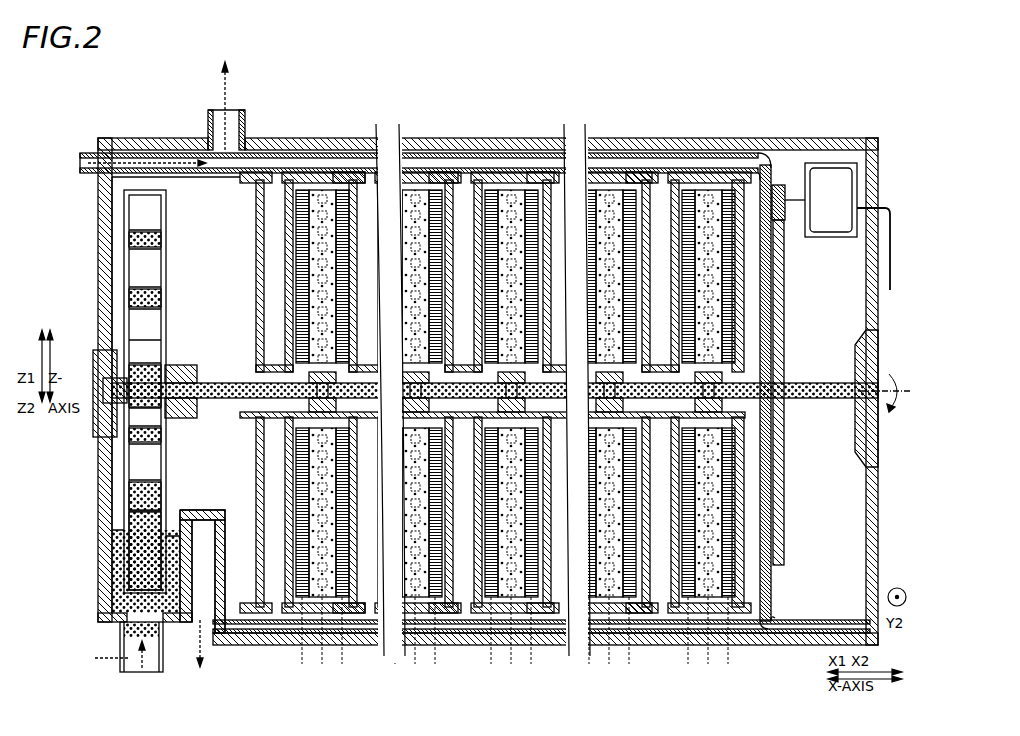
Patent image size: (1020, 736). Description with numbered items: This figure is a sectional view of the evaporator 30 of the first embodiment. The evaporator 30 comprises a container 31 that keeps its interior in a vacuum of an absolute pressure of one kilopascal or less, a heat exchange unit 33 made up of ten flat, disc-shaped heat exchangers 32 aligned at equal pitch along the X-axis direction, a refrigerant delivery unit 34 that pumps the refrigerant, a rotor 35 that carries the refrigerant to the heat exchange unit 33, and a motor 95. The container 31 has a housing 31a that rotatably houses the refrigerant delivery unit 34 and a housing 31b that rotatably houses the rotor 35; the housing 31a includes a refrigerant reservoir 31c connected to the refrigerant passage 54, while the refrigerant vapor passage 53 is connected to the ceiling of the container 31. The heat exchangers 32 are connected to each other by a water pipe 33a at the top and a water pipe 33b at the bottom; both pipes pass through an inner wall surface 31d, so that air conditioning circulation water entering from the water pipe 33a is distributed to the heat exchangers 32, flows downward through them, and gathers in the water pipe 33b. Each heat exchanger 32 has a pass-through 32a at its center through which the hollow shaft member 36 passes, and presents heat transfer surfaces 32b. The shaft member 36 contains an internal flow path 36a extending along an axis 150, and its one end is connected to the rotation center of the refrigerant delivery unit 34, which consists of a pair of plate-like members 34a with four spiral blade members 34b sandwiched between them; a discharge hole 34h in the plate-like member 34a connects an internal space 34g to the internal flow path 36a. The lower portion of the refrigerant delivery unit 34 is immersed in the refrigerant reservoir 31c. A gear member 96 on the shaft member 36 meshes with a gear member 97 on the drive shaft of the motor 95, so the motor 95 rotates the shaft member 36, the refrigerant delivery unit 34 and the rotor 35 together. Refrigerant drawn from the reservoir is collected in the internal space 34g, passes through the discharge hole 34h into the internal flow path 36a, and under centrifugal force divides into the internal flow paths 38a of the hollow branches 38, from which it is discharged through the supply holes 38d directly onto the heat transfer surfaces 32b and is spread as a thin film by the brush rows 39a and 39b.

The evaporator 30 is at (40, 112).
The container 31 is at (876, 150).
The housing 31a is at (98, 500).
The housing 31b is at (815, 632).
The refrigerant reservoir 31c is at (115, 590).
The inner wall surface 31d is at (98, 242).
The heat exchanger 32 is at (262, 180).
The pass-through 32a is at (258, 418).
The heat transfer surface 32b is at (256, 555).
The heat exchange unit 33 is at (766, 160).
The water pipe 33a is at (82, 170).
The water pipe 33b is at (768, 634).
The refrigerant delivery unit 34 is at (172, 232).
The plate-like member 34a is at (166, 283).
The blade member 34b is at (162, 342).
The internal space 34g is at (252, 403).
The discharge hole 34h is at (182, 372).
The rotor 35 is at (228, 298).
The shaft member 36 is at (818, 385).
The internal flow path 36a is at (230, 383).
The branch 38 is at (322, 190).
The internal flow path 38a is at (322, 192).
The supply hole 38d is at (513, 673).
The brush row 39a is at (342, 190).
The brush row 39b is at (300, 192).
The refrigerant vapor passage 53 is at (205, 119).
The refrigerant passage 54 is at (162, 662).
The motor 95 is at (830, 165).
The gear member 96 is at (786, 300).
The gear member 97 is at (786, 212).
The axis 150 is at (848, 378).